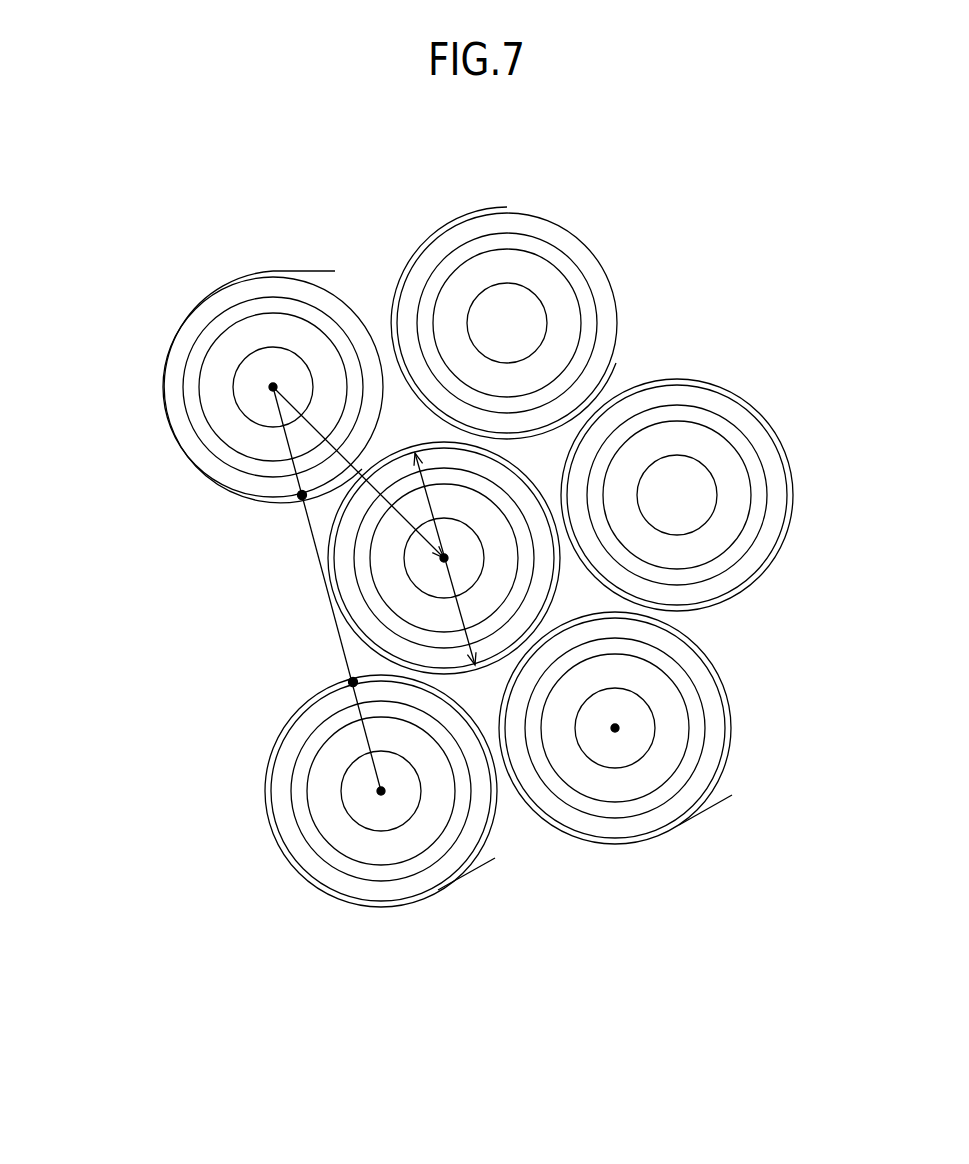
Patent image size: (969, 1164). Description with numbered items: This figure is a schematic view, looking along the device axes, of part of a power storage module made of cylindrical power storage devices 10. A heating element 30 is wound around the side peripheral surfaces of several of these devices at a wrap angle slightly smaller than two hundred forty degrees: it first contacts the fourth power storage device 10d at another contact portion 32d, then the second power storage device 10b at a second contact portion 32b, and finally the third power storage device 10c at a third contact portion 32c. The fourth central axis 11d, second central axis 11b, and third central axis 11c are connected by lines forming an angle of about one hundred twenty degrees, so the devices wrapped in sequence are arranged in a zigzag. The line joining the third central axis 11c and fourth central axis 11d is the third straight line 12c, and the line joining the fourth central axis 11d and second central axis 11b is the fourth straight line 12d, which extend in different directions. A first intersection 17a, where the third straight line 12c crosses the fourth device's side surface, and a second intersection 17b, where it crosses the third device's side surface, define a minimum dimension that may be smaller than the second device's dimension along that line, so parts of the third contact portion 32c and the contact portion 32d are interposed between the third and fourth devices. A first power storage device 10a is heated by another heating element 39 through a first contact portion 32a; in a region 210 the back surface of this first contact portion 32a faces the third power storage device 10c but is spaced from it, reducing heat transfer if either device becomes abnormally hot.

The power storage device 10 is at (590, 265).
The first power storage device 10a is at (705, 680).
The second power storage device 10b is at (340, 568).
The third power storage device 10c is at (295, 842).
The fourth power storage device 10d is at (178, 350).
The second central axis 11b is at (437, 557).
The third central axis 11c is at (378, 800).
The fourth central axis 11d is at (270, 383).
The third straight line 12c is at (330, 607).
The fourth straight line 12d is at (376, 474).
The first intersection 17a is at (300, 495).
The second intersection 17b is at (352, 683).
The heating element 30 is at (308, 270).
The first contact portion 32a is at (620, 845).
The second contact portion 32b is at (527, 470).
The third contact portion 32c is at (265, 787).
The another contact portion 32d is at (158, 418).
The another heating element 39 is at (703, 815).
The region 210 is at (507, 810).